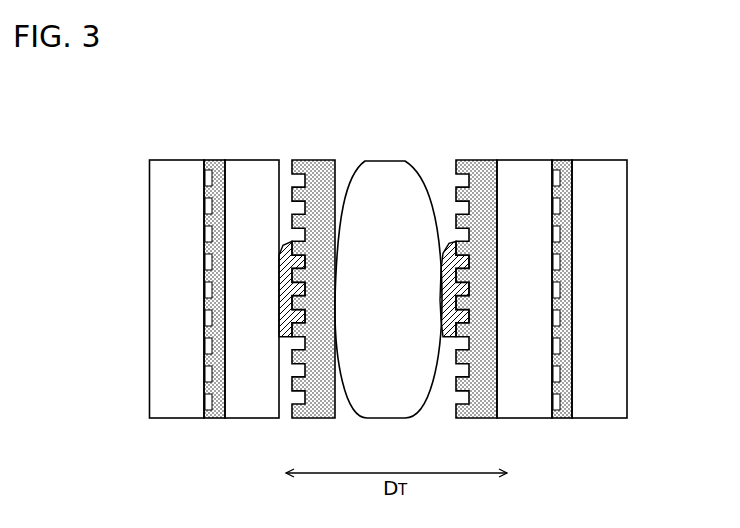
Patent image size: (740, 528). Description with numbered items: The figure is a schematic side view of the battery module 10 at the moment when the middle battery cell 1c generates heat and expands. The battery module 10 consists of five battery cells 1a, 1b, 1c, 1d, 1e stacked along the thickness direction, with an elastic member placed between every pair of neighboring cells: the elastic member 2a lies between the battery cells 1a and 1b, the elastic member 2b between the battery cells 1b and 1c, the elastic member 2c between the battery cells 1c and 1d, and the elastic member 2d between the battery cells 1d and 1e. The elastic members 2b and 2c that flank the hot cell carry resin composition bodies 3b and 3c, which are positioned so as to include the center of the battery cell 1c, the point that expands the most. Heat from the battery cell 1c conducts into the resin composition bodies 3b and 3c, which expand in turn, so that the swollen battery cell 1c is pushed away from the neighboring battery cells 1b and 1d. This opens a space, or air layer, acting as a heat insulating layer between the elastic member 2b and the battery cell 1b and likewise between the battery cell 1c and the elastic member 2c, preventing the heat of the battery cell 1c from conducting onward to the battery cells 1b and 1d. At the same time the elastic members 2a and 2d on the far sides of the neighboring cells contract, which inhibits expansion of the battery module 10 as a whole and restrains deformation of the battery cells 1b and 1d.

The battery module 10 is at (591, 71).
The battery cell 1a is at (177, 185).
The elastic member 2a is at (208, 165).
The battery cell 1b is at (250, 185).
The elastic member 2b is at (317, 168).
The battery cell 1c is at (388, 185).
The elastic member 2c is at (480, 167).
The battery cell 1d is at (522, 185).
The elastic member 2d is at (563, 167).
The battery cell 1e is at (595, 185).
The resin composition body 3b is at (283, 333).
The resin composition body 3c is at (450, 328).